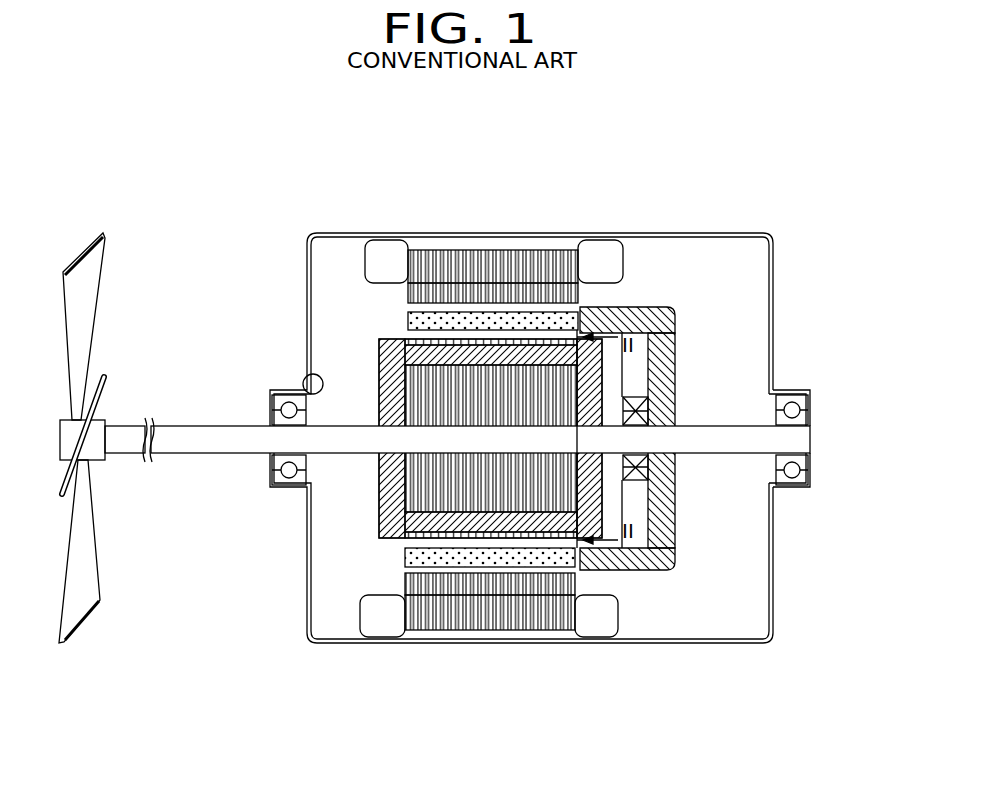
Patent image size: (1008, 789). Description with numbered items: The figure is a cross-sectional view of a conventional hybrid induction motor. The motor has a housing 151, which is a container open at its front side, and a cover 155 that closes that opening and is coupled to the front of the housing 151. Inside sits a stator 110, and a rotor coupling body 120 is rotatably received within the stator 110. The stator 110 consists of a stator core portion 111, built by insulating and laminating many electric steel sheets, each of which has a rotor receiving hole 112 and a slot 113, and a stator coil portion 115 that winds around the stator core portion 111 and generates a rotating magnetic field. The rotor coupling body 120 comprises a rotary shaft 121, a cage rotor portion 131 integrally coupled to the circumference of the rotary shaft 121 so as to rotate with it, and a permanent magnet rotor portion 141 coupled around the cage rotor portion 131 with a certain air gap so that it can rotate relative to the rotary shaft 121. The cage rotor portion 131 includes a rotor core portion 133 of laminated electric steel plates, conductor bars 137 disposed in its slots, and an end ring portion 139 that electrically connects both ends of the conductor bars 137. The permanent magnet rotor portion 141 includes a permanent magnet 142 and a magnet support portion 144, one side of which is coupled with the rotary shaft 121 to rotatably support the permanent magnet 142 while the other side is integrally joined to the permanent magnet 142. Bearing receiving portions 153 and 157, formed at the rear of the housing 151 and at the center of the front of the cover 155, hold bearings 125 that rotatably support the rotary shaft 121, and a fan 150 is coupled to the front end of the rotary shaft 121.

The stator 110 is at (491, 372).
The stator core portion 111 is at (491, 387).
The rotor receiving hole 112 is at (492, 312).
The slot 113 is at (462, 262).
The stator coil portion 115 is at (592, 267).
The rotor coupling body 120 is at (665, 283).
The rotary shaft 121 is at (778, 440).
The bearings 125 is at (272, 472).
The cage rotor portion 131 is at (398, 468).
The rotor core portion 133 is at (427, 484).
The conductor bar 137 is at (400, 532).
The end ring portion 139 is at (379, 509).
The permanent magnet rotor portion 141 is at (540, 526).
The permanent magnet 142 is at (540, 568).
The magnet support portion 144 is at (615, 560).
The fan 150 is at (82, 283).
The housing 151 is at (370, 233).
The bearing receiving portion 153 is at (790, 393).
The cover 155 is at (307, 267).
The bearing receiving portion 157 is at (310, 376).